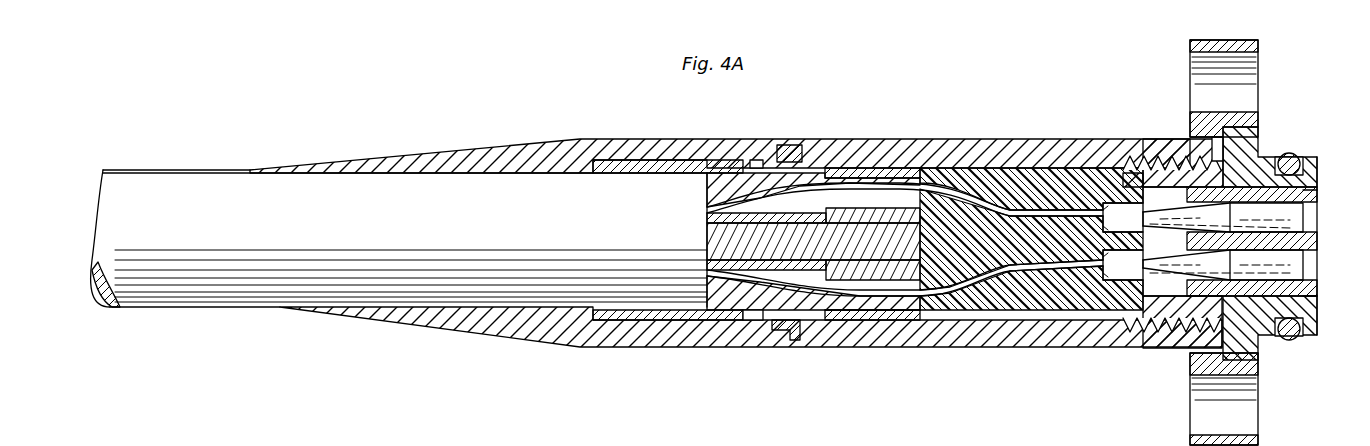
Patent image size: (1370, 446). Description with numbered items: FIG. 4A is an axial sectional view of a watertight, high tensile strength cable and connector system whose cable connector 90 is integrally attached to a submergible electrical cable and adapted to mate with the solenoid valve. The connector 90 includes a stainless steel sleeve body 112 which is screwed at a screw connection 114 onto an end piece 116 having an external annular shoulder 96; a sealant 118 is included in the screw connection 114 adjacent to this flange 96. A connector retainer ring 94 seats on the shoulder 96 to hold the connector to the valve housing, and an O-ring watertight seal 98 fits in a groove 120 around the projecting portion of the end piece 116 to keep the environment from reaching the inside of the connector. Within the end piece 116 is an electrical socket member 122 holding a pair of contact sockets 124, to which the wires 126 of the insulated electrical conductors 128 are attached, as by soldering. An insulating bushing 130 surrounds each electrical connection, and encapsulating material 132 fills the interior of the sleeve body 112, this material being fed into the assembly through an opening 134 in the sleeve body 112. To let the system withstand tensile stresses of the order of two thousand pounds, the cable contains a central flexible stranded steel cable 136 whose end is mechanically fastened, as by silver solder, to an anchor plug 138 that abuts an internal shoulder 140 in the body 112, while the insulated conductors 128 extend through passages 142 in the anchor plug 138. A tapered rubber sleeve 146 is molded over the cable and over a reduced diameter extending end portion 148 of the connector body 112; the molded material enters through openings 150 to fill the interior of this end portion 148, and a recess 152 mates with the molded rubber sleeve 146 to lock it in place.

The cable connector 90 is at (937, 111).
The connector retainer ring 94 is at (1240, 42).
The annular shoulder 96 is at (1243, 135).
The annular watertight seal 98 is at (1292, 156).
The sleeve body 112 is at (866, 152).
The screw connection 114 is at (1163, 160).
The end piece 116 is at (1167, 326).
The sealant 118 is at (1212, 138).
The groove 120 is at (1316, 184).
The electrical socket member 122 is at (1262, 340).
The contact sockets 124 is at (1303, 265).
The wires 126 is at (1068, 190).
The insulated electrical conductors 128 is at (988, 202).
The insulating bushing 130 is at (1063, 200).
The encapsulating material 132 is at (970, 172).
The opening 134 is at (1126, 166).
The central flexible stranded steel cable 136 is at (706, 240).
The anchor plug 138 is at (905, 315).
The internal shoulder 140 is at (820, 318).
The passages 142 is at (843, 172).
The tapered rubber sleeve 146 is at (513, 155).
The reduced diameter extending end portion 148 is at (670, 163).
The openings 150 is at (756, 163).
The recess 152 is at (805, 160).